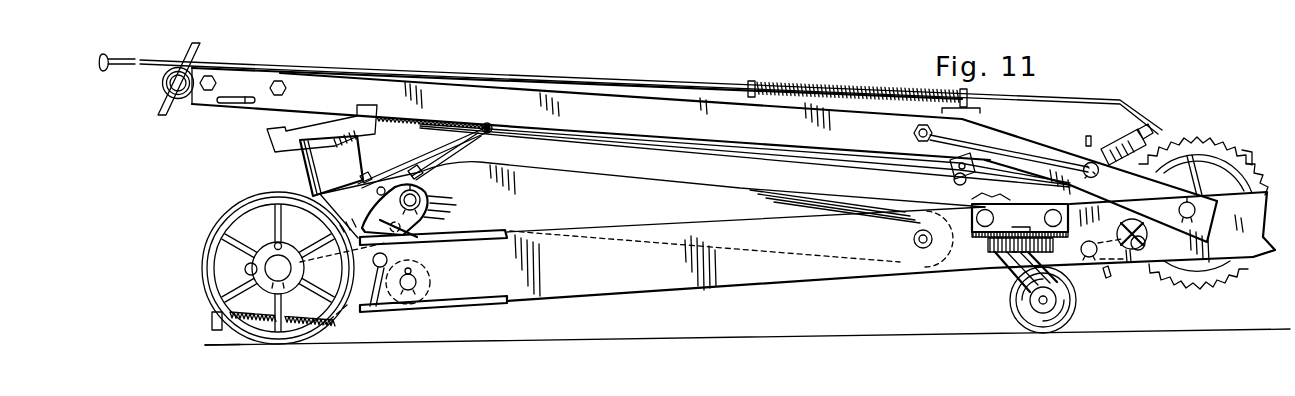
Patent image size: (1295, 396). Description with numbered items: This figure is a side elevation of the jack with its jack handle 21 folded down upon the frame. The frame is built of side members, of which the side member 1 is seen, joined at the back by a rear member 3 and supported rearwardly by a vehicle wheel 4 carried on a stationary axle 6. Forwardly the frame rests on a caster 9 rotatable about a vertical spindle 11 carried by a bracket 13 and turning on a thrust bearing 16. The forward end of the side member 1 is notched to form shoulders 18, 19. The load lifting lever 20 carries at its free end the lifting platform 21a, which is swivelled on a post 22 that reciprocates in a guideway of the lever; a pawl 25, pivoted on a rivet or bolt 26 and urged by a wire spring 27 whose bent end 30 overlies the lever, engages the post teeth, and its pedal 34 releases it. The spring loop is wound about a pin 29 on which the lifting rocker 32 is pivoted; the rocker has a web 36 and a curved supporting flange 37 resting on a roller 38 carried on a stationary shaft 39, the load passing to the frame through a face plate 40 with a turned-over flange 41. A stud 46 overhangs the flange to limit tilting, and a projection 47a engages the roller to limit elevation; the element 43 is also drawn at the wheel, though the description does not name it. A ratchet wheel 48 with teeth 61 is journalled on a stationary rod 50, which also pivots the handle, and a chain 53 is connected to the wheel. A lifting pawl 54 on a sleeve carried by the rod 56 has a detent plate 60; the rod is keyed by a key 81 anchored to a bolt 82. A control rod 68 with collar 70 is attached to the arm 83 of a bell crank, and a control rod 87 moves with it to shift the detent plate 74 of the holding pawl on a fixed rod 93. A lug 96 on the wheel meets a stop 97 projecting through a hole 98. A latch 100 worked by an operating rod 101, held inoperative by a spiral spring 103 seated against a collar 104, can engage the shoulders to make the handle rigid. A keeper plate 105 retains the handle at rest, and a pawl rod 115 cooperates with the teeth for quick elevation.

The side member 1 is at (616, 296).
The rear member 3 is at (245, 268).
The vehicle wheel 4 is at (293, 268).
The axle 6 is at (270, 250).
The caster 9 is at (1013, 320).
The vertical spindle 11 is at (1033, 223).
The bracket 13 is at (978, 243).
The thrust bearing 16 is at (1007, 271).
The shoulder 18 is at (1262, 212).
The shoulder 19 is at (1265, 262).
The load lifting lever 20 is at (494, 176).
The jack handle 21 is at (1057, 137).
The lifting platform 21a is at (276, 141).
The post 22 is at (311, 177).
The pawl 25 is at (369, 170).
The rivet or bolt 26 is at (376, 193).
The wire spring 27 is at (422, 160).
The pin 29 is at (422, 197).
The spring end 30 is at (428, 172).
The lifting rocker 32 is at (436, 206).
The pedal 34 is at (448, 146).
The web 36 is at (408, 241).
The supporting flange 37 is at (358, 219).
The roller 38 is at (399, 309).
The stationary shaft 39 is at (418, 283).
The face plate 40 is at (490, 305).
The turned-over flange 41 is at (490, 242).
The wheel bracket 43 is at (211, 322).
The stud 46 is at (376, 309).
The projection 47a is at (220, 337).
The ratchet wheel 48 is at (1174, 141).
The stationary rod 50 is at (1178, 211).
The chain 53 is at (993, 200).
The lifting pawl 54 is at (1139, 131).
The rod 56 is at (1088, 165).
The detent plate 60 is at (1091, 142).
The teeth 61 is at (1205, 290).
The control rod 68 is at (818, 165).
The collar 70 is at (488, 131).
The detent plate 74 is at (1108, 278).
The key 81 is at (1016, 153).
The bolt 82 is at (917, 134).
The arm 83 is at (959, 185).
The control rod 87 is at (969, 177).
The fixed rod 93 is at (1086, 259).
The lug 96 is at (1126, 262).
The stop 97 is at (1139, 252).
The hole 98 is at (1149, 242).
The latch 100 is at (1116, 140).
The operating rod 101 is at (896, 172).
The spiral spring 103 is at (436, 121).
The collar 104 is at (490, 126).
The keeper plate 105 is at (1246, 158).
The pawl rod 115 is at (1074, 97).